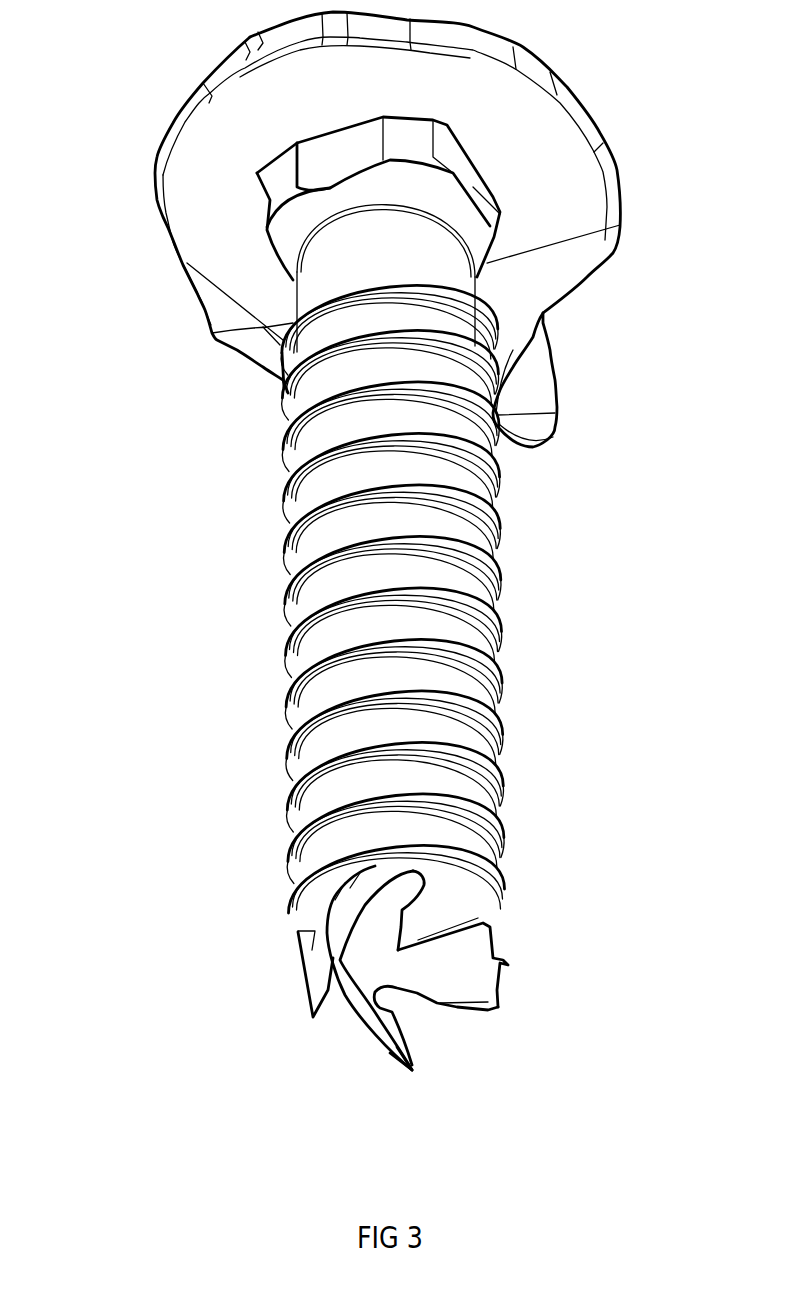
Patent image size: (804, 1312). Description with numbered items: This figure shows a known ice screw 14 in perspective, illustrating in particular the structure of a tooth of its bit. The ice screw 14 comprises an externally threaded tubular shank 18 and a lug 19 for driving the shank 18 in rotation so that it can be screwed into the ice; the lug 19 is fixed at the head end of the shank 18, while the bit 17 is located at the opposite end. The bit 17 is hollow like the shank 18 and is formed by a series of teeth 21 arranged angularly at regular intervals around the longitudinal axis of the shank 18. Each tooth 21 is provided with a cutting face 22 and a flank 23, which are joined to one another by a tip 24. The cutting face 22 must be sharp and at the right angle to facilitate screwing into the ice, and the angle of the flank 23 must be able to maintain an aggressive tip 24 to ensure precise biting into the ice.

The ice screw 14 is at (226, 563).
The bit 17 is at (272, 988).
The externally threaded tubular shank 18 is at (417, 567).
The lug 19 is at (523, 153).
The tooth 21 is at (425, 918).
The cutting face 22 is at (408, 1045).
The flank 23 is at (380, 1048).
The tip 24 is at (412, 1072).